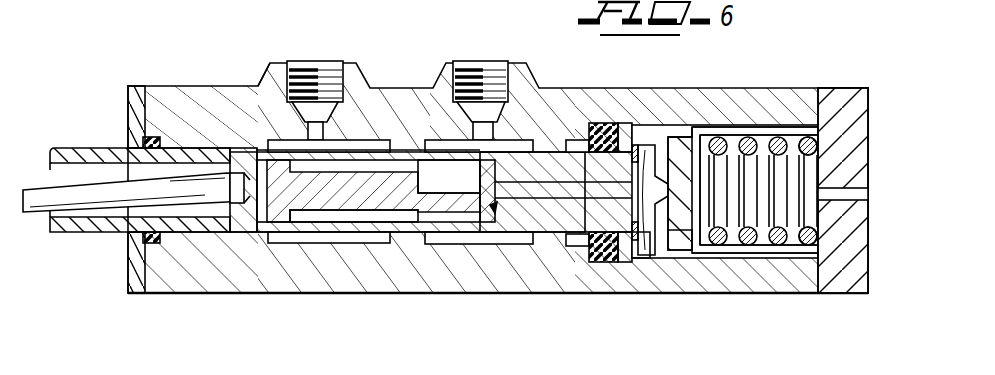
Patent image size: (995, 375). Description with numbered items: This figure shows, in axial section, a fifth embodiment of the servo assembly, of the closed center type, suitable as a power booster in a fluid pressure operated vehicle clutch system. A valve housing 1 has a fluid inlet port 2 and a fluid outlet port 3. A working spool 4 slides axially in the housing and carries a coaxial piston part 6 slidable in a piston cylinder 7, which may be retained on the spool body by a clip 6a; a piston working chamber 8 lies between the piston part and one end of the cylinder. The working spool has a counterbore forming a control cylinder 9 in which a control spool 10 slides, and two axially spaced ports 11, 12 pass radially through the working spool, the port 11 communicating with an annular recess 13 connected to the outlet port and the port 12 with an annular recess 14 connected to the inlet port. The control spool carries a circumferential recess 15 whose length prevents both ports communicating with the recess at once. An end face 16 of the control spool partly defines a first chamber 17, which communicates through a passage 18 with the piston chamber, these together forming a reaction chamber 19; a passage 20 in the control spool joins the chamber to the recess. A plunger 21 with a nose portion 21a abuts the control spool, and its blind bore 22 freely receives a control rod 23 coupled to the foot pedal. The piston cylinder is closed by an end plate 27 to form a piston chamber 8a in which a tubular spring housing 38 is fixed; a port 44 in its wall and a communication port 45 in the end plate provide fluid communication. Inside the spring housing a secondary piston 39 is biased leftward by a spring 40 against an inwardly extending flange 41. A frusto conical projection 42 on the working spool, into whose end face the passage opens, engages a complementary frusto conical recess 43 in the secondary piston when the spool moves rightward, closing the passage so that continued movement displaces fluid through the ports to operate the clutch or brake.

The valve housing 1 is at (200, 98).
The fluid inlet port 2 is at (478, 82).
The fluid outlet port 3 is at (310, 72).
The working spool 4 is at (517, 140).
The piston part 6 is at (653, 147).
The clip 6a is at (640, 262).
The piston cylinder 7 is at (675, 135).
The piston working chamber 8 is at (590, 122).
The piston chamber 8a is at (647, 262).
The control cylinder 9 is at (423, 190).
The control spool 10 is at (293, 245).
The port 11 is at (267, 107).
The port 12 is at (438, 158).
The annular recess 13 is at (378, 140).
The annular recess 14 is at (582, 140).
The circumferential recess 15 is at (403, 150).
The end face 16 is at (462, 200).
The first chamber 17 is at (477, 212).
The passage 18 is at (560, 200).
The reaction chamber 19 is at (495, 213).
The passage 20 is at (424, 187).
The plunger 21 is at (87, 150).
The nose portion 21a is at (240, 230).
The blind bore 22 is at (53, 173).
The control rod 23 is at (87, 203).
The end plate 27 is at (843, 280).
The tubular spring housing 38 is at (733, 262).
The secondary piston 39 is at (700, 245).
The spring 40 is at (810, 168).
The flange 41 is at (687, 128).
The frusto conical projection 42 is at (667, 130).
The frusto conical recess 43 is at (657, 257).
The port 44 is at (773, 258).
The communication port 45 is at (848, 195).